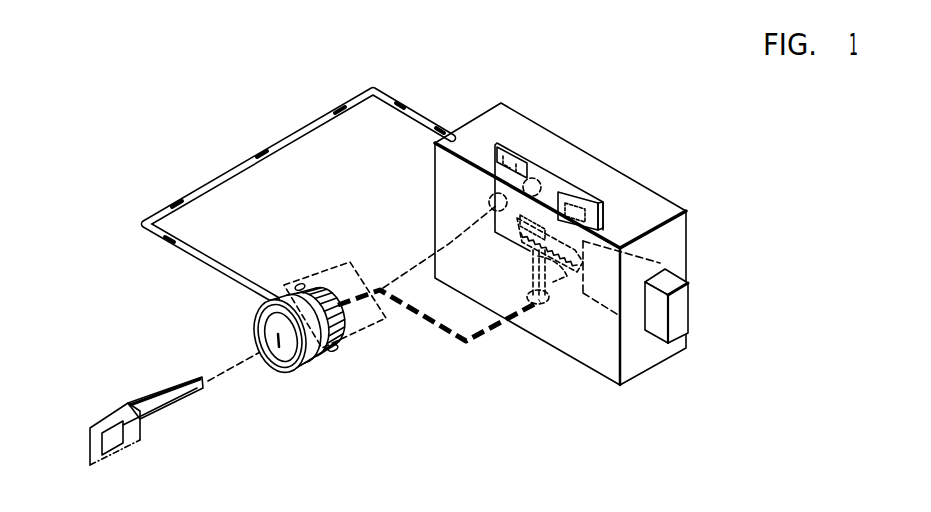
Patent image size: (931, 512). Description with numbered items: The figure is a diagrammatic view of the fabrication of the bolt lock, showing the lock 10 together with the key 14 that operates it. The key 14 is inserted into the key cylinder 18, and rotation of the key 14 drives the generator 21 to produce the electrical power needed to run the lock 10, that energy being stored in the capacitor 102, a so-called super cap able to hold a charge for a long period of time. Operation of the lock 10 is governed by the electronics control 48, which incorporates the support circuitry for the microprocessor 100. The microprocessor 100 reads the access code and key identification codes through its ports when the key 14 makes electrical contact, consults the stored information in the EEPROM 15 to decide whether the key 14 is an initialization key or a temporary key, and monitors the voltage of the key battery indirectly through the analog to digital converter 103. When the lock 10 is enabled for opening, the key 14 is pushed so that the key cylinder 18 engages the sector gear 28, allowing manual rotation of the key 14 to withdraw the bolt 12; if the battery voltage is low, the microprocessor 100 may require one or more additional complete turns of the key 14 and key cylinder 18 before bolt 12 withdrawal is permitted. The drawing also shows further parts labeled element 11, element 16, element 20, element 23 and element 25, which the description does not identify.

The lock 10 is at (648, 158).
The housing 11 is at (656, 197).
The bolt 12 is at (689, 316).
The key 14 is at (112, 413).
The EEPROM 15 is at (122, 444).
The wire harness 16 is at (538, 178).
The key cylinder 18 is at (548, 307).
The lock 20 is at (278, 298).
The generator 21 is at (323, 268).
The mounting screws 23 is at (301, 283).
The cable 25 is at (361, 276).
The sector gear 28 is at (563, 273).
The electronics control 48 is at (513, 158).
The microprocessor 100 is at (650, 136).
The capacitor 102 is at (585, 164).
The analog to digital converter 103 is at (498, 142).